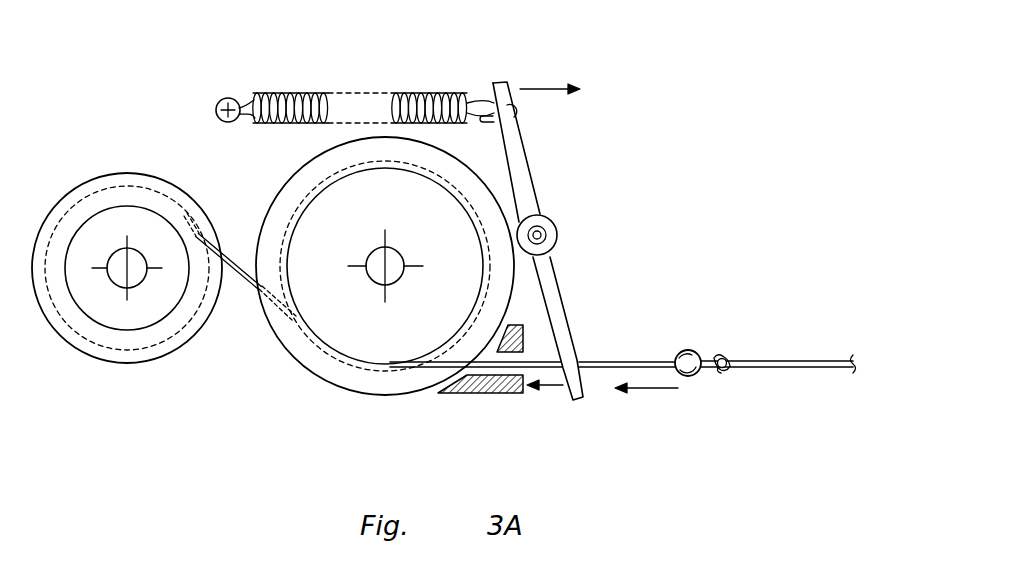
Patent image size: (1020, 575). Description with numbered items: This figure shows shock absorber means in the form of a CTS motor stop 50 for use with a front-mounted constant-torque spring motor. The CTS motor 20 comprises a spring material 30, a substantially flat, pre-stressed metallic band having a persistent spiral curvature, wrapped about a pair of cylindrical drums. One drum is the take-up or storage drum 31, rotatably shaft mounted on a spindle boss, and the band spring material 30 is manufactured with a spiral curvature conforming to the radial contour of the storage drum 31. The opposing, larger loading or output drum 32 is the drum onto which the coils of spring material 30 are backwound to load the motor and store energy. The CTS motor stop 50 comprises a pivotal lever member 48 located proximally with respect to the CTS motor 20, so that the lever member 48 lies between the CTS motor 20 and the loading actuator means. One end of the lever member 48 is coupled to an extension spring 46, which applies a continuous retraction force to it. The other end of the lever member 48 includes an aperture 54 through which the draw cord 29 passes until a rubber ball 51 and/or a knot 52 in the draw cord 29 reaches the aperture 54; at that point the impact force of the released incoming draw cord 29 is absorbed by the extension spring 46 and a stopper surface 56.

The CTS motor 20 is at (250, 362).
The draw cord 29 is at (818, 368).
The spring material 30 is at (220, 257).
The storage drum 31 is at (68, 340).
The output drum 32 is at (337, 390).
The extension spring 46 is at (440, 90).
The lever member 48 is at (532, 178).
The CTS motor stop 50 is at (641, 86).
The rubber ball 51 is at (693, 380).
The knot 52 is at (735, 340).
The aperture 54 is at (557, 373).
The stopper surface 56 is at (487, 405).